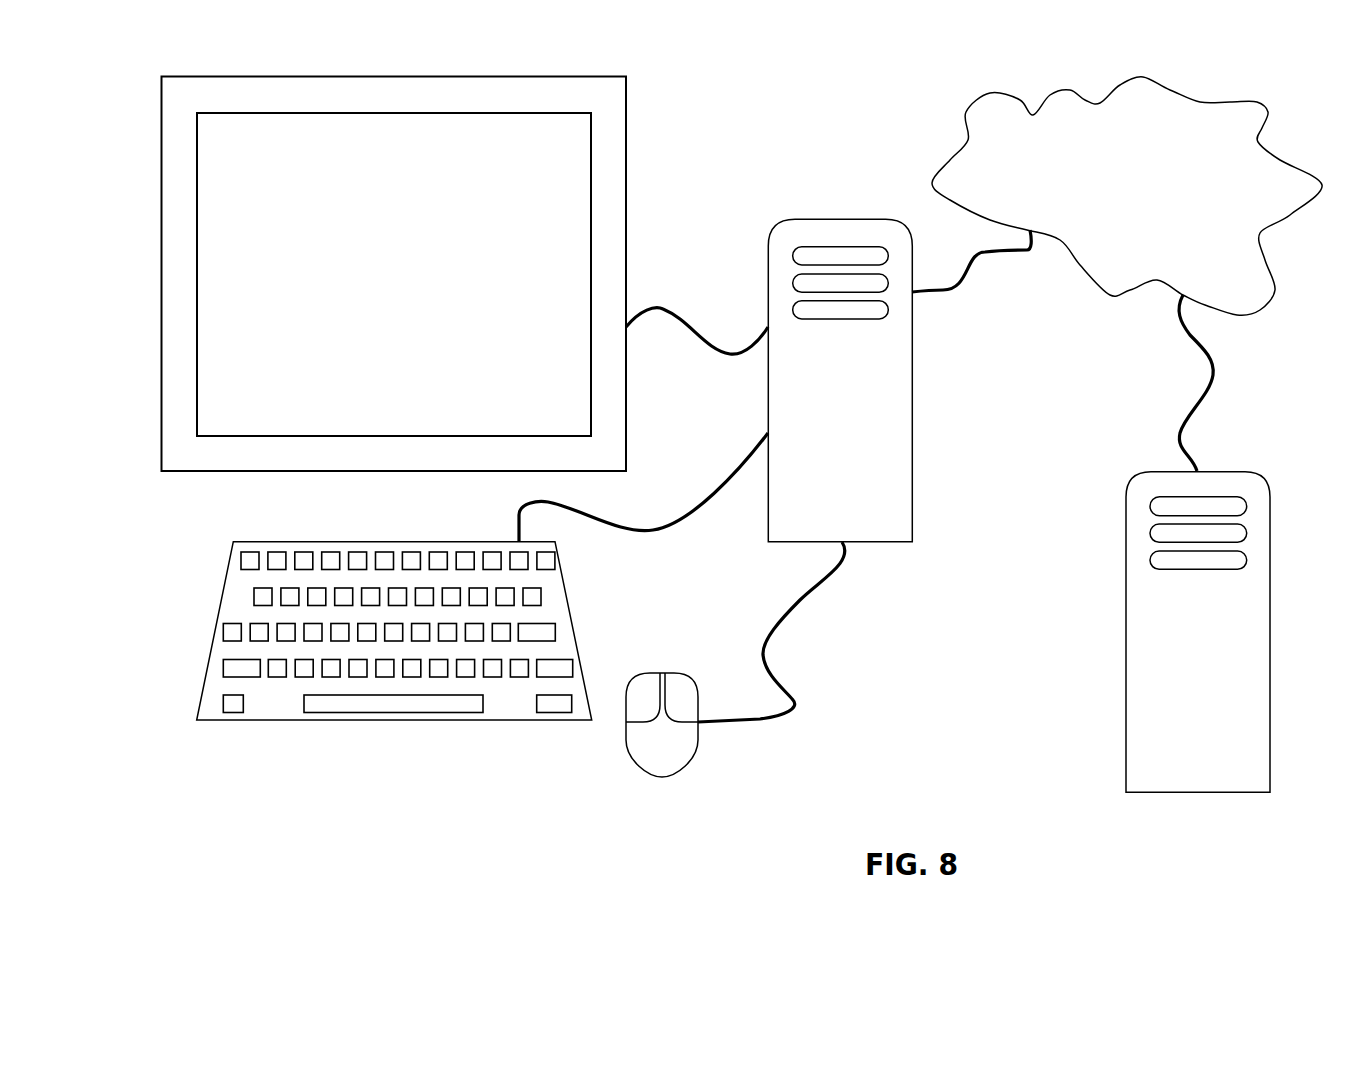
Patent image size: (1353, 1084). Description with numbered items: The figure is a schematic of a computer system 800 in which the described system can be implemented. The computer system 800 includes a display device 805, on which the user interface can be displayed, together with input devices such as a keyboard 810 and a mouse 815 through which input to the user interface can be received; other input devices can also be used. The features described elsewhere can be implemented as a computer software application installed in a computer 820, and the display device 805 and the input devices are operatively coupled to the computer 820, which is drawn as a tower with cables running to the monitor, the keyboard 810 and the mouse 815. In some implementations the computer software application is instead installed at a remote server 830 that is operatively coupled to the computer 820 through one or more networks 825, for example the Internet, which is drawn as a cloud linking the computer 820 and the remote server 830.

The computer system 800 is at (198, 865).
The display device 805 is at (162, 257).
The keyboard 810 is at (251, 722).
The mouse 815 is at (652, 775).
The computer 820 is at (912, 453).
The networks 825 is at (968, 145).
The remote server 830 is at (1126, 667).